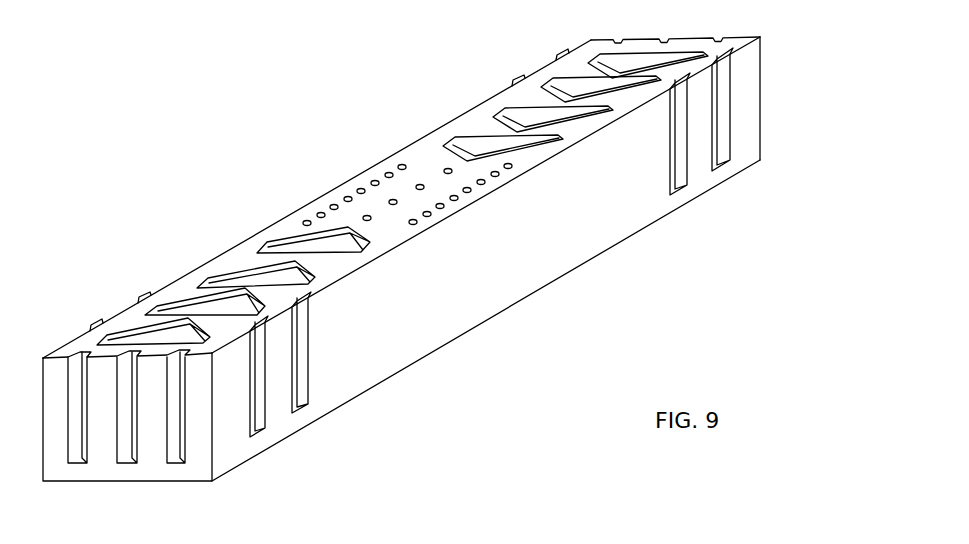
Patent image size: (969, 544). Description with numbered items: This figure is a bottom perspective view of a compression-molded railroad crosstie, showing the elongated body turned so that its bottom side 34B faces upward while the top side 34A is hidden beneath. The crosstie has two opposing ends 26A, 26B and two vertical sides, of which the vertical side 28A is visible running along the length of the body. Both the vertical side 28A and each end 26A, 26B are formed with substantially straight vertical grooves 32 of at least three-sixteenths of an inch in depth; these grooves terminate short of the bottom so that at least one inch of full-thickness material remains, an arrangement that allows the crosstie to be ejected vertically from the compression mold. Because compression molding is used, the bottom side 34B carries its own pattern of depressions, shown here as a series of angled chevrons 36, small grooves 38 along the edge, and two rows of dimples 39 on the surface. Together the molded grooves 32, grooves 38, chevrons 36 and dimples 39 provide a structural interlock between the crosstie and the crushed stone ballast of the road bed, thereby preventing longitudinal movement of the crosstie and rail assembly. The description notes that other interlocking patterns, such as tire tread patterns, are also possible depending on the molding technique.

The end 26A is at (760, 97).
The end 26B is at (103, 465).
The vertical side 28A is at (702, 170).
The vertical grooves 32 is at (310, 372).
The top side 34A is at (488, 318).
The bottom side 34B is at (227, 260).
The chevrons 36 is at (293, 237).
The grooves 38 is at (98, 330).
The dimples 39 is at (334, 206).